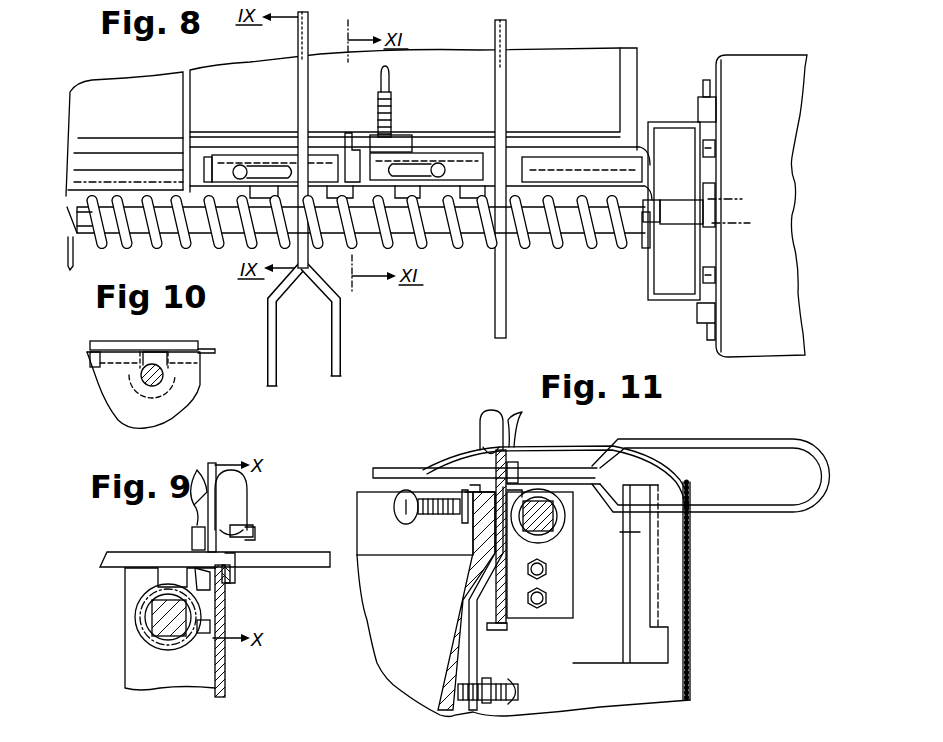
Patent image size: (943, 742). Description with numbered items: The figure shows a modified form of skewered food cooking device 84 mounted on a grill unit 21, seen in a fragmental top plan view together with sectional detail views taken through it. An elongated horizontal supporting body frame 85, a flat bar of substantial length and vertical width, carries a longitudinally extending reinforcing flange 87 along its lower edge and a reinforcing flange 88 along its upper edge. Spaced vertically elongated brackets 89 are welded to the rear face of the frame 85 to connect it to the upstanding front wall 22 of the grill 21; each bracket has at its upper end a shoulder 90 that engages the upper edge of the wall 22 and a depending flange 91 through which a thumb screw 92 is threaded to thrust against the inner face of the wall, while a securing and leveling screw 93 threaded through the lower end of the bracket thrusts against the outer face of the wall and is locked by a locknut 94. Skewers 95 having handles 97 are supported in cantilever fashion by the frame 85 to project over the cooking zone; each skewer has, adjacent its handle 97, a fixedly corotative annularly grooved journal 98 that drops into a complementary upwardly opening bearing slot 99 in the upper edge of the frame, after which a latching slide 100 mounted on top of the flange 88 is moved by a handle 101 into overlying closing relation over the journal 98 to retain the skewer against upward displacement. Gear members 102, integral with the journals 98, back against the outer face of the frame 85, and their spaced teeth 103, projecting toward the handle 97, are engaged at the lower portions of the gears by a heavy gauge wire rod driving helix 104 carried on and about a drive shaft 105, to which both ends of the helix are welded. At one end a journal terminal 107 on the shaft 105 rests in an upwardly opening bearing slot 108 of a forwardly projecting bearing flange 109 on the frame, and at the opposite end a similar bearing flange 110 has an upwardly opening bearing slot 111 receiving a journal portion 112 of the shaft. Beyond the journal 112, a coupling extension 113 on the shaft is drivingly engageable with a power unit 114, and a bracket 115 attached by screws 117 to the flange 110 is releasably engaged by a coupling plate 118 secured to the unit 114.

In FIG. 8, the grill unit 21 is at (638, 64).
In FIG. 11, the grill unit 21 is at (383, 662).
In FIG. 11, the front wall 22 is at (450, 630).
In FIG. 8, the device 84 is at (588, 283).
In FIG. 10, the supporting body frame 85 is at (180, 408).
In FIG. 9, the supporting body frame 85 is at (224, 660).
In FIG. 11, the supporting body frame 85 is at (508, 618).
In FIG. 11, the reinforcing flange 87 is at (490, 631).
In FIG. 8, the reinforcing flange 88 is at (570, 160).
In FIG. 11, the reinforcing flange 88 is at (483, 462).
In FIG. 11, the brackets 89 is at (467, 603).
In FIG. 11, the shoulder 90 is at (480, 490).
In FIG. 11, the depending flange 91 is at (458, 517).
In FIG. 8, the thumb screw 92 is at (391, 113).
In FIG. 11, the thumb screw 92 is at (407, 523).
In FIG. 11, the securing and leveling screw 93 is at (490, 704).
In FIG. 11, the locknut 94 is at (513, 680).
In FIG. 8, the skewers 95 is at (298, 90).
In FIG. 10, the skewers 95 is at (150, 395).
In FIG. 9, the skewers 95 is at (309, 561).
In FIG. 11, the skewers 95 is at (385, 468).
In FIG. 8, the handles 97 is at (341, 322).
In FIG. 11, the handles 97 is at (761, 513).
In FIG. 10, the journal 98 is at (165, 352).
In FIG. 9, the journal 98 is at (232, 572).
In FIG. 10, the bearing slot 99 is at (158, 358).
In FIG. 9, the bearing slot 99 is at (230, 565).
In FIG. 8, the slide 100 is at (240, 157).
In FIG. 10, the slide 100 is at (187, 340).
In FIG. 9, the slide 100 is at (242, 535).
In FIG. 11, the slide 100 is at (483, 448).
In FIG. 8, the handle 101 is at (208, 157).
In FIG. 9, the handle 101 is at (238, 493).
In FIG. 11, the handle 101 is at (491, 412).
In FIG. 9, the gear members 102 is at (192, 522).
In FIG. 11, the gear members 102 is at (517, 455).
In FIG. 9, the teeth 103 is at (193, 466).
In FIG. 11, the teeth 103 is at (523, 414).
In FIG. 8, the driving helix 104 is at (560, 242).
In FIG. 9, the driving helix 104 is at (153, 648).
In FIG. 11, the driving helix 104 is at (565, 530).
In FIG. 8, the drive shaft 105 is at (206, 230).
In FIG. 9, the drive shaft 105 is at (152, 617).
In FIG. 11, the drive shaft 105 is at (549, 517).
In FIG. 8, the journal terminal 107 is at (79, 155).
In FIG. 8, the bearing slot 108 is at (96, 240).
In FIG. 8, the bearing flange 109 is at (68, 262).
In FIG. 8, the bearing flange 110 is at (645, 238).
In FIG. 11, the bearing flange 110 is at (573, 558).
In FIG. 8, the bearing slot 111 is at (661, 188).
In FIG. 11, the bearing slot 111 is at (518, 497).
In FIG. 8, the journal portion 112 is at (656, 205).
In FIG. 8, the coupling extension 113 is at (686, 217).
In FIG. 8, the power unit 114 is at (745, 56).
In FIG. 11, the power unit 114 is at (692, 619).
In FIG. 8, the bracket 115 is at (680, 300).
In FIG. 11, the bracket 115 is at (604, 665).
In FIG. 11, the screws 117 is at (549, 597).
In FIG. 8, the coupling plate 118 is at (703, 268).
In FIG. 11, the coupling plate 118 is at (640, 532).